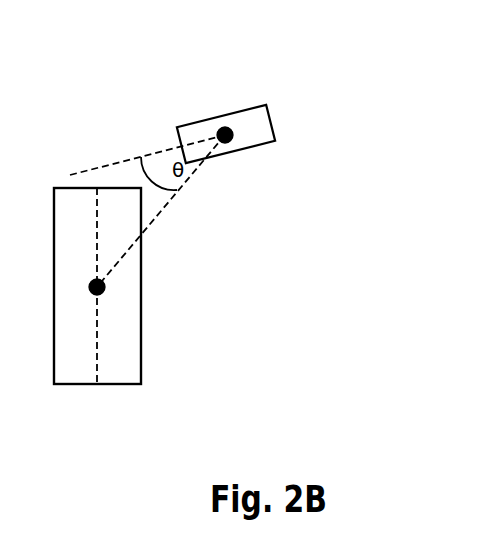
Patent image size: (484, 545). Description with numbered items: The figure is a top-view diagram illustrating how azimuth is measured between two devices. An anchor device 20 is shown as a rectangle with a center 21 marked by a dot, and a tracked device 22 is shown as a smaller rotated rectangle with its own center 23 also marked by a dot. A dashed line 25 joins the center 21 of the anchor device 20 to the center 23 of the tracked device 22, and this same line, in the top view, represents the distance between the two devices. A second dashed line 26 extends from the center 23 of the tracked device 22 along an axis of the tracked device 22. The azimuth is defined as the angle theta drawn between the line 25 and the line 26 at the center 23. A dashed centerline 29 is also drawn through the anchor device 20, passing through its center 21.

The anchor device 20 is at (141, 345).
The center of the anchor device 21 is at (90, 283).
The tracked device 22 is at (276, 138).
The center of the tracked device 23 is at (218, 132).
The line joining the centers 25 is at (157, 218).
The line along the axis of the tracked device 26 is at (98, 167).
The centerline of first device 29 is at (95, 375).